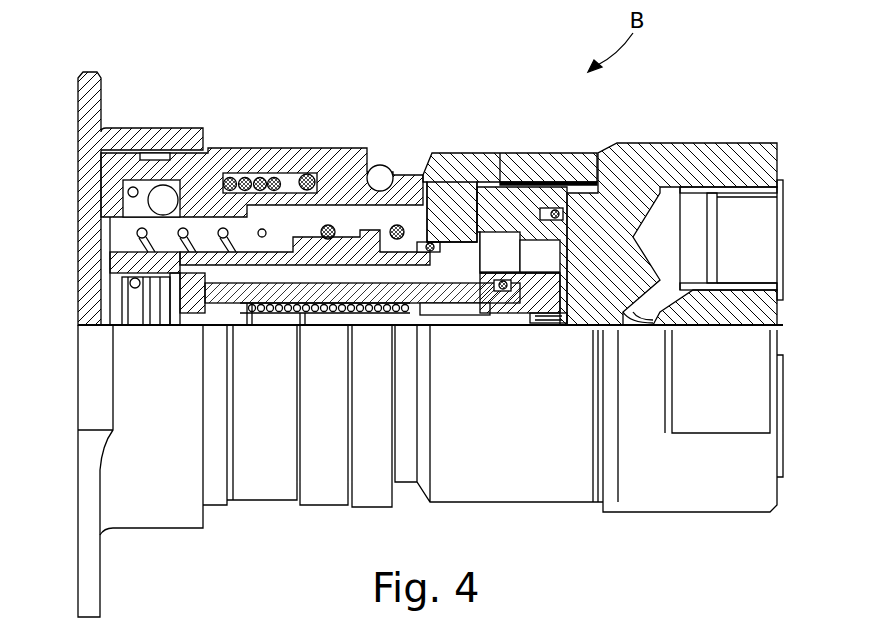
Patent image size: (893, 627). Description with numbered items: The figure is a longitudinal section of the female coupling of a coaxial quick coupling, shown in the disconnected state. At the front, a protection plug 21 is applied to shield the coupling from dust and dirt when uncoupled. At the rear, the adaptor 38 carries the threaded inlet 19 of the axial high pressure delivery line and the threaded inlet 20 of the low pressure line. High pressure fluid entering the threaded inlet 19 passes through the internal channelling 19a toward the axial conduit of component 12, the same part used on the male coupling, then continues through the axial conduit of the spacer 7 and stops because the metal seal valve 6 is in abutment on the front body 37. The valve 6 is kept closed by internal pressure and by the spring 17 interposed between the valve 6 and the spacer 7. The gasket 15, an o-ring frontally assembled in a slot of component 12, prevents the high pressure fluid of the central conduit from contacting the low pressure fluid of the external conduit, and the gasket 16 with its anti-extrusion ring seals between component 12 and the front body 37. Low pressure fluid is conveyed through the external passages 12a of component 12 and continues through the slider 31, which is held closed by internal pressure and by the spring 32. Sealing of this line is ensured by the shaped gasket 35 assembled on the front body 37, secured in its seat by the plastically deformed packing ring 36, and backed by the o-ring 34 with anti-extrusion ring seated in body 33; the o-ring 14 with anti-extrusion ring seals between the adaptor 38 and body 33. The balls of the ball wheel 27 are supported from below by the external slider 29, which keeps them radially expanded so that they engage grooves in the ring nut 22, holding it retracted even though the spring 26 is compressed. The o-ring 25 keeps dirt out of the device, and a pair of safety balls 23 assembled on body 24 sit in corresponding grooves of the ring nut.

The protection plug 21 is at (96, 130).
The ring nut 22 is at (213, 162).
The spring 26 is at (244, 180).
The o-ring 25 is at (307, 172).
The spring 32 is at (328, 224).
The safety balls 23 is at (380, 170).
The o-ring 34 is at (397, 192).
The body 24 is at (443, 163).
The body 33 is at (472, 190).
The external passages 12a is at (533, 180).
The o-ring 14 is at (553, 207).
The adaptor 38 is at (633, 183).
The threaded inlet 19 is at (697, 210).
The ball wheel 27 is at (143, 200).
The external slider 29 is at (120, 243).
The slider 31 is at (340, 258).
The metal seal valve 6 is at (165, 330).
The shaped gasket 35 is at (186, 305).
The packing ring 36 is at (202, 282).
The spring 17 is at (257, 313).
The front body 37 is at (332, 302).
The spacer 7 is at (375, 318).
The gasket 16 is at (504, 290).
The component 12 is at (525, 300).
The gasket 15 is at (577, 315).
The internal channelling 19a is at (640, 318).
The threaded inlet 20 is at (732, 418).